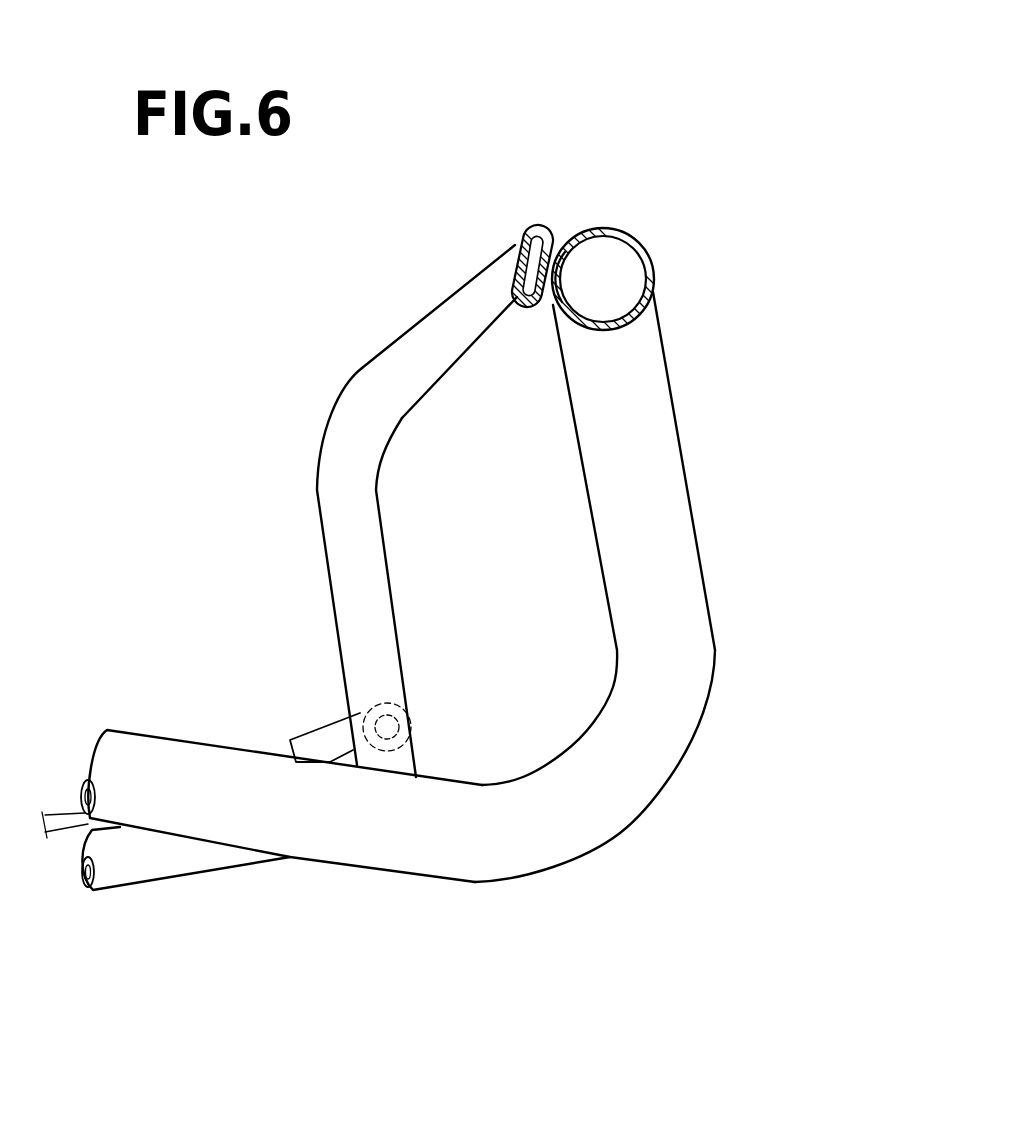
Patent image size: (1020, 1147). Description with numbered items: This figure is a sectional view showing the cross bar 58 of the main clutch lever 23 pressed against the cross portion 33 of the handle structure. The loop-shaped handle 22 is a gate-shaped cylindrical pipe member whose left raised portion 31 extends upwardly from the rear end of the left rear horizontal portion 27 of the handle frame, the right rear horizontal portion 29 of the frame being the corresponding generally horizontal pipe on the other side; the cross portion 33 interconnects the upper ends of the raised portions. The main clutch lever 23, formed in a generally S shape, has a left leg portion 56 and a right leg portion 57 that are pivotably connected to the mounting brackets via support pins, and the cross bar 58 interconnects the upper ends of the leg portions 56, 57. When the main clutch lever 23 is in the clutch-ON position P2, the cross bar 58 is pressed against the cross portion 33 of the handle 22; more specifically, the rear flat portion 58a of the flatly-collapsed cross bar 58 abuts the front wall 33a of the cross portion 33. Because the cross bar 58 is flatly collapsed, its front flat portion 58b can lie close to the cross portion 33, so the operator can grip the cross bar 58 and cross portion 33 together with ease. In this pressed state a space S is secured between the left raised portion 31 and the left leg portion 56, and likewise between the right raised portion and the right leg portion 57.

The loop-shaped handle 22 is at (686, 587).
The left raised portion 31 is at (682, 557).
The main clutch lever 23 is at (352, 357).
The left rear horizontal portion 27 is at (262, 841).
The right rear horizontal portion 29 is at (186, 858).
The cross portion 33 is at (620, 334).
The front wall 33a is at (518, 280).
The left leg portion 56 is at (263, 572).
The right leg portion 57 is at (322, 472).
The cross bar 58 is at (545, 236).
The rear flat portion 58a is at (601, 231).
The front flat portion 58b is at (517, 240).
The clutch-ON position P2 is at (546, 210).
The space S is at (500, 558).